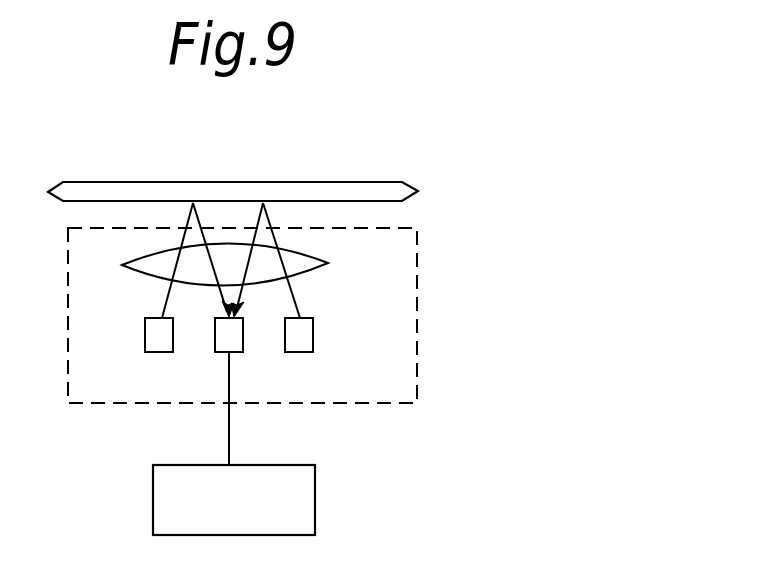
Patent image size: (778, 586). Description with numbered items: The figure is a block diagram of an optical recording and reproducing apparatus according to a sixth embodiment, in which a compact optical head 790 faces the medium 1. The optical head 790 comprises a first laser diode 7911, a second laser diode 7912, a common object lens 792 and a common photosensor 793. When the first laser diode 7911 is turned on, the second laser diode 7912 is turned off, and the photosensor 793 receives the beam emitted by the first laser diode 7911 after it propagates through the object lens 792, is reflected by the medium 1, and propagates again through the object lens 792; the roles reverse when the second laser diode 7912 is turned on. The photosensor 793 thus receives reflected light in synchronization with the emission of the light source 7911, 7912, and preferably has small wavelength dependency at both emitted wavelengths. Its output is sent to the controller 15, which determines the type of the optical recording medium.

The medium 1 is at (368, 181).
The optical head 790 is at (418, 270).
The common object lens 792 is at (321, 254).
The first laser diode 7911 is at (145, 334).
The second laser diode 7912 is at (313, 330).
The common photosensor 793 is at (215, 334).
The controller 15 is at (315, 492).